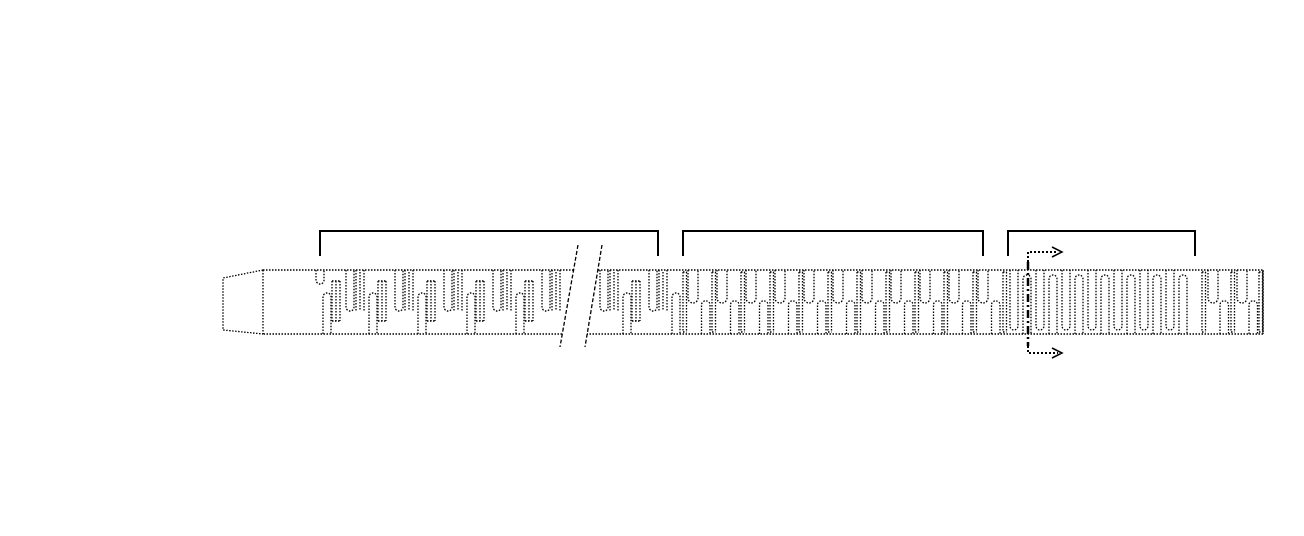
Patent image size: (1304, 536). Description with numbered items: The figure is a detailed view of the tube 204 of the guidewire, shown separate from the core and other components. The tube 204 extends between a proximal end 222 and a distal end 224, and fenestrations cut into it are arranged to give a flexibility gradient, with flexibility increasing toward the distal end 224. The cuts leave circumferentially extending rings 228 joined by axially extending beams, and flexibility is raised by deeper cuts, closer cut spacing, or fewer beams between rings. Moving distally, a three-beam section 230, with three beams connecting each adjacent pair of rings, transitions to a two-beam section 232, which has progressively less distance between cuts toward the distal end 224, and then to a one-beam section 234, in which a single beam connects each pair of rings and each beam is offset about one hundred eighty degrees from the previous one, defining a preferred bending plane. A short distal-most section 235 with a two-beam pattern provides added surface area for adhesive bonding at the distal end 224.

The tube 204 is at (275, 138).
The proximal end 222 is at (218, 317).
The distal end 224 is at (1265, 308).
The circumferentially extending rings 228 is at (410, 316).
The three-beam section 230 is at (520, 231).
The two-beam section 232 is at (829, 231).
The one-beam section 234 is at (1119, 231).
The distal-most section 235 is at (1218, 270).